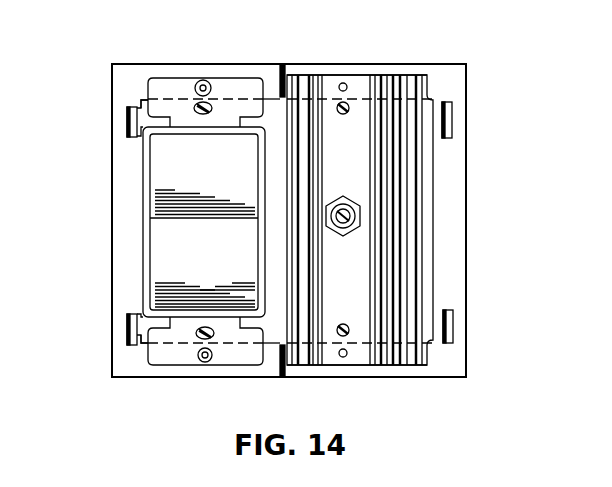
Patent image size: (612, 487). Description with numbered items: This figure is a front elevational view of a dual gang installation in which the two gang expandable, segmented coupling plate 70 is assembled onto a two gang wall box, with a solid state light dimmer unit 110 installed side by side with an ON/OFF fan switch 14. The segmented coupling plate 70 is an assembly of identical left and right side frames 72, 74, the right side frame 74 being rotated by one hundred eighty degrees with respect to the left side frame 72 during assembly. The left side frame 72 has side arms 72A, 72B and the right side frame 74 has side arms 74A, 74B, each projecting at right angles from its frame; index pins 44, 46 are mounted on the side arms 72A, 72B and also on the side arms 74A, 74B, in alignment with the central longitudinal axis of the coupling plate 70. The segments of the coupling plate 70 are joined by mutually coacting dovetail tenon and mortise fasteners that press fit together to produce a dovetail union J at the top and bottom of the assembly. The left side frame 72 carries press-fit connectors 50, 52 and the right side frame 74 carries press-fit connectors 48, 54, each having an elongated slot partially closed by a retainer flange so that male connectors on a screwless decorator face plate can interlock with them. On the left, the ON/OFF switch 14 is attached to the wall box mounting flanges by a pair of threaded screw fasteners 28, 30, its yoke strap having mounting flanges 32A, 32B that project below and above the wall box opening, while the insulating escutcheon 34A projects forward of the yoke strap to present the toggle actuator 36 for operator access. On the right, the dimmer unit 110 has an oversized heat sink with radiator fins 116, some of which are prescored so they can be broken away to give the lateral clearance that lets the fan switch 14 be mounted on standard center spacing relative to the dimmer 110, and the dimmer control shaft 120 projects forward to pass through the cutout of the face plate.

The ON/OFF switch 14 is at (152, 222).
The threaded screw fastener 28 is at (207, 326).
The threaded screw fastener 30 is at (208, 114).
The mounting flange 32A is at (150, 357).
The mounting flange 32B is at (238, 88).
The insulating escutcheon 34A is at (148, 248).
The toggle actuator 36 is at (204, 248).
The index pin 44 is at (208, 362).
The index pin 46 is at (203, 79).
The press-fit connector 48 is at (450, 326).
The press-fit connector 50 is at (132, 338).
The press-fit connector 52 is at (132, 120).
The press-fit connector 54 is at (447, 118).
The segmented coupling plate 70 is at (357, 62).
The left side frame 72 is at (164, 221).
The side arm 72A is at (182, 370).
The side arm 72B is at (151, 77).
The right side frame 74 is at (405, 221).
The side arm 74A is at (426, 370).
The side arm 74B is at (395, 75).
The solid state light dimmer unit 110 is at (420, 158).
The heat sink radiator fins 116 is at (405, 243).
The dimmer control shaft 120 is at (364, 176).
The dovetail union J is at (280, 58).